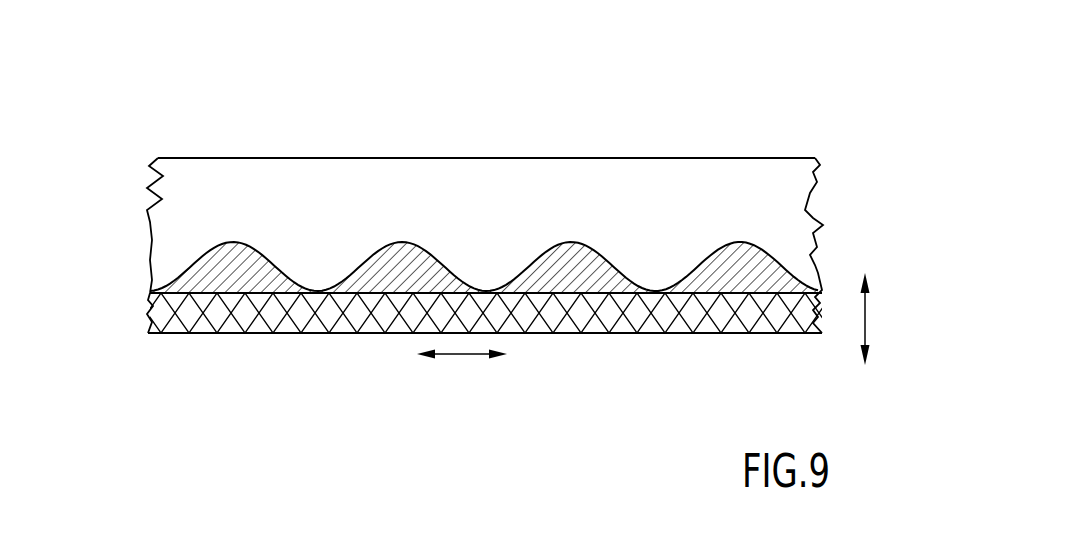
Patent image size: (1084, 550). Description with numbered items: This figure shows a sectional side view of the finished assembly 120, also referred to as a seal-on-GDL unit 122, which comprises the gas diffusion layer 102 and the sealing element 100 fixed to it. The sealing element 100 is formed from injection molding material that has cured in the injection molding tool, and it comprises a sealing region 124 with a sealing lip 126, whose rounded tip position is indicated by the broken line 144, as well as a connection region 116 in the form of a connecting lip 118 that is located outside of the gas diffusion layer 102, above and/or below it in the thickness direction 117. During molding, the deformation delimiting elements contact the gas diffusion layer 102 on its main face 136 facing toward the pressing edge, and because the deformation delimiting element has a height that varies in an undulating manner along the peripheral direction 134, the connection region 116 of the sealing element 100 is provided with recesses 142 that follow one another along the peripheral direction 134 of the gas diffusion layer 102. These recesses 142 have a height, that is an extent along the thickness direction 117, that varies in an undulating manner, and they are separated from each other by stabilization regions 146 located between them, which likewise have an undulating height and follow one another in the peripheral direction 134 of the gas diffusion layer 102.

The sealing element 100 is at (775, 183).
The gas diffusion layer 102 is at (783, 318).
The connection region 116 is at (187, 265).
The thickness direction 117 is at (865, 320).
The connecting lip 118 is at (778, 250).
The assembly 120 is at (160, 153).
The seal-on-GDL unit 122 is at (228, 153).
The sealing region 124 is at (522, 153).
The sealing lip 126 is at (677, 153).
The peripheral direction 134 is at (463, 357).
The main face 136 is at (802, 268).
The recesses 142 is at (318, 279).
The broken line 144 is at (328, 158).
The stabilization regions 146 is at (240, 267).